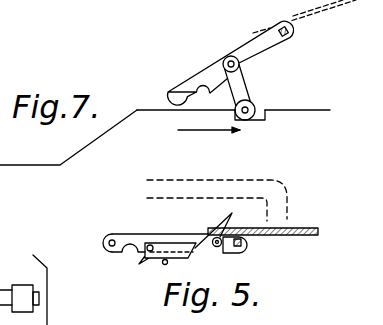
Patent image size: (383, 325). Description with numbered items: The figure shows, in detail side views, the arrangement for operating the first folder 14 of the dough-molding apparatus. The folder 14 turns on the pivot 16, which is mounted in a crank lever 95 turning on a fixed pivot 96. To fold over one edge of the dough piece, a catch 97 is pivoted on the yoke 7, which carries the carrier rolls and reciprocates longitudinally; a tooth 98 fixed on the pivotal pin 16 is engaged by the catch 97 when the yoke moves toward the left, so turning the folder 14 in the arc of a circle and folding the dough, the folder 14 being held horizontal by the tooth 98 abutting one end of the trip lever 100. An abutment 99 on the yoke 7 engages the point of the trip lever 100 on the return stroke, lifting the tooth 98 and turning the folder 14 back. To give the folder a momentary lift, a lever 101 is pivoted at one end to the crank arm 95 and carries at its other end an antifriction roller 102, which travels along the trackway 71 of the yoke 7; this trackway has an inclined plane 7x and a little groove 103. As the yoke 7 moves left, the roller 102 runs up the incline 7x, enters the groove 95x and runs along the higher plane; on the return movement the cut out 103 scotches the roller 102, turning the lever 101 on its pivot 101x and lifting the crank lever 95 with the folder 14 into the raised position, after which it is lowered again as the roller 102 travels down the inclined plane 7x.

In FIG. 7, the crank lever 95 is at (208, 76).
In FIG. 5, the crank lever 95 is at (161, 224).
In FIG. 7, the groove 95x is at (197, 91).
In FIG. 7, the pivot 101x is at (229, 57).
In FIG. 7, the lever 101 is at (241, 81).
In FIG. 7, the antifriction roller 102 is at (250, 105).
In FIG. 7, the groove 103 is at (257, 120).
In FIG. 7, the yoke 7 is at (311, 112).
In FIG. 7, the trackway 71 is at (156, 112).
In FIG. 7, the inclined plane 7x is at (98, 136).
In FIG. 7, the folder 14 is at (320, 12).
In FIG. 5, the folder 14 is at (263, 231).
In FIG. 5, the fixed pivot 96 is at (111, 239).
In FIG. 5, the trip lever 100 is at (181, 243).
In FIG. 5, the tooth 98 is at (233, 214).
In FIG. 5, the pivot 16 is at (244, 253).
In FIG. 5, the catch 97 is at (266, 220).
In FIG. 5, the abutment 99 is at (62, 262).